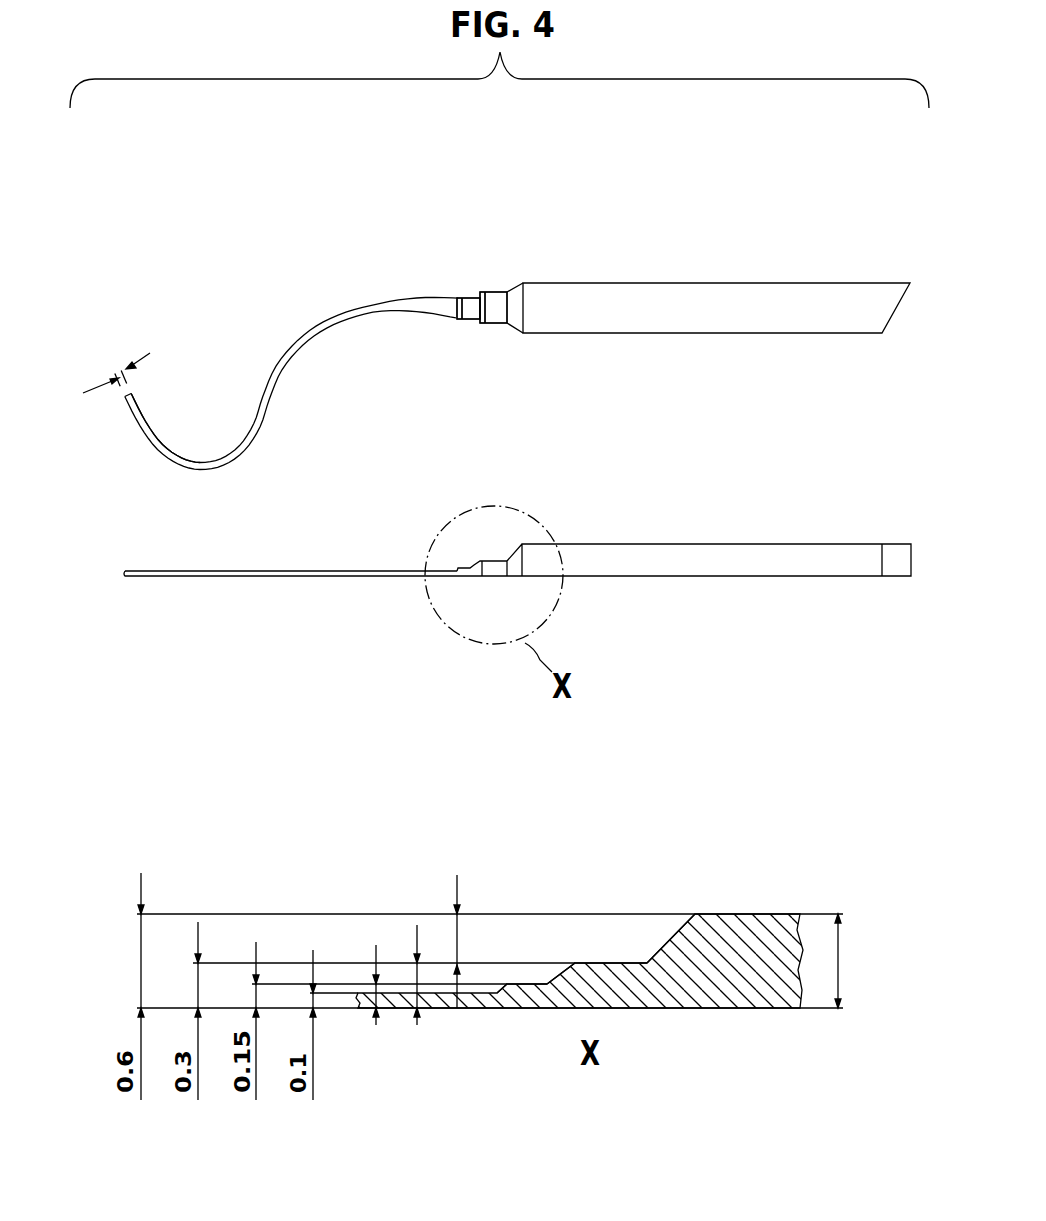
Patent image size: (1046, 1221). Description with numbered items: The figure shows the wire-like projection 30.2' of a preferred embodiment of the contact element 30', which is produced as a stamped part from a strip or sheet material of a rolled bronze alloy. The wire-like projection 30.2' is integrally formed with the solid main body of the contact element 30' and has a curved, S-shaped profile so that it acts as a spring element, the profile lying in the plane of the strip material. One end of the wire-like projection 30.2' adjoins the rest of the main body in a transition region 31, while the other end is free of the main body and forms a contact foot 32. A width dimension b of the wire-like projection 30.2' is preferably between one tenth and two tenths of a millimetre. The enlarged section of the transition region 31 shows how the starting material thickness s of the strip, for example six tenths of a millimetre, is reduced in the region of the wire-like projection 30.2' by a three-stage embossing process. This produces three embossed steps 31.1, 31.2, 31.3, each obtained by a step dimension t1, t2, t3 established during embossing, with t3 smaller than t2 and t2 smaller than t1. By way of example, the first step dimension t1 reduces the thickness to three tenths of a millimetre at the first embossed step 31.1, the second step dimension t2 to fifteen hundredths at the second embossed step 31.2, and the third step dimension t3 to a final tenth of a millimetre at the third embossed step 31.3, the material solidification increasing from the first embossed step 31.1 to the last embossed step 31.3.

The contact element 30' is at (683, 248).
The wire-like projection 30.2' is at (291, 331).
The transition region 31 is at (489, 278).
The contact foot 32 is at (130, 430).
The width dimension b is at (110, 372).
The first embossed step 31.1 is at (657, 940).
The second embossed step 31.2 is at (558, 973).
The third embossed step 31.3 is at (497, 992).
The first step dimension t1 is at (455, 937).
The second step dimension t2 is at (415, 973).
The third step dimension t3 is at (362, 990).
The starting material thickness s is at (843, 955).